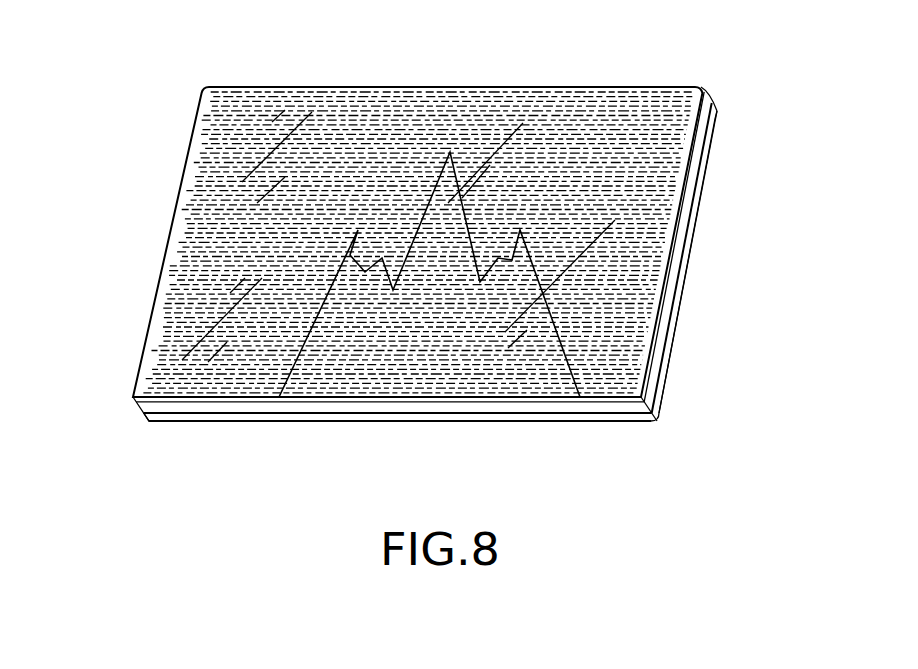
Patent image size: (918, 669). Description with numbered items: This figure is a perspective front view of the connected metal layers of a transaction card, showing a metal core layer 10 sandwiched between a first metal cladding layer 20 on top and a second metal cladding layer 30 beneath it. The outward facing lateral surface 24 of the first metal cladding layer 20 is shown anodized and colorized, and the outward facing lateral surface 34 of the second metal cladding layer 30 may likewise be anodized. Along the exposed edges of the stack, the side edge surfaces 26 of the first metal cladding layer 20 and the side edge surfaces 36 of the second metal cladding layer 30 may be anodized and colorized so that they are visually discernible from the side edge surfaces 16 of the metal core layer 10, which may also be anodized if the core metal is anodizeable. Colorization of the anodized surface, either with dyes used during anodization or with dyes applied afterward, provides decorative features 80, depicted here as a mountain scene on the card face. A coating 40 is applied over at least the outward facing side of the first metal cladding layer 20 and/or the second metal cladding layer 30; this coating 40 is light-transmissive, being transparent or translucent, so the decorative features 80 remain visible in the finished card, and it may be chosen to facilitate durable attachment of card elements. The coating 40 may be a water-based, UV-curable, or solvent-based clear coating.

The metal core layer 10 is at (143, 410).
The side edge surfaces of the metal core layer 16 is at (702, 171).
The first metal cladding layer 20 is at (131, 397).
The outward facing lateral surface of the first metal cladding layer 24 is at (572, 113).
The side edge surfaces of the first metal cladding layer 26 is at (722, 108).
The second metal cladding layer 30 is at (149, 422).
The outward facing lateral surface of the second metal cladding layer 34 is at (602, 422).
The side edge surfaces of the second metal cladding layer 36 is at (700, 235).
The coating 40 is at (562, 278).
The decorative features 80 is at (456, 160).